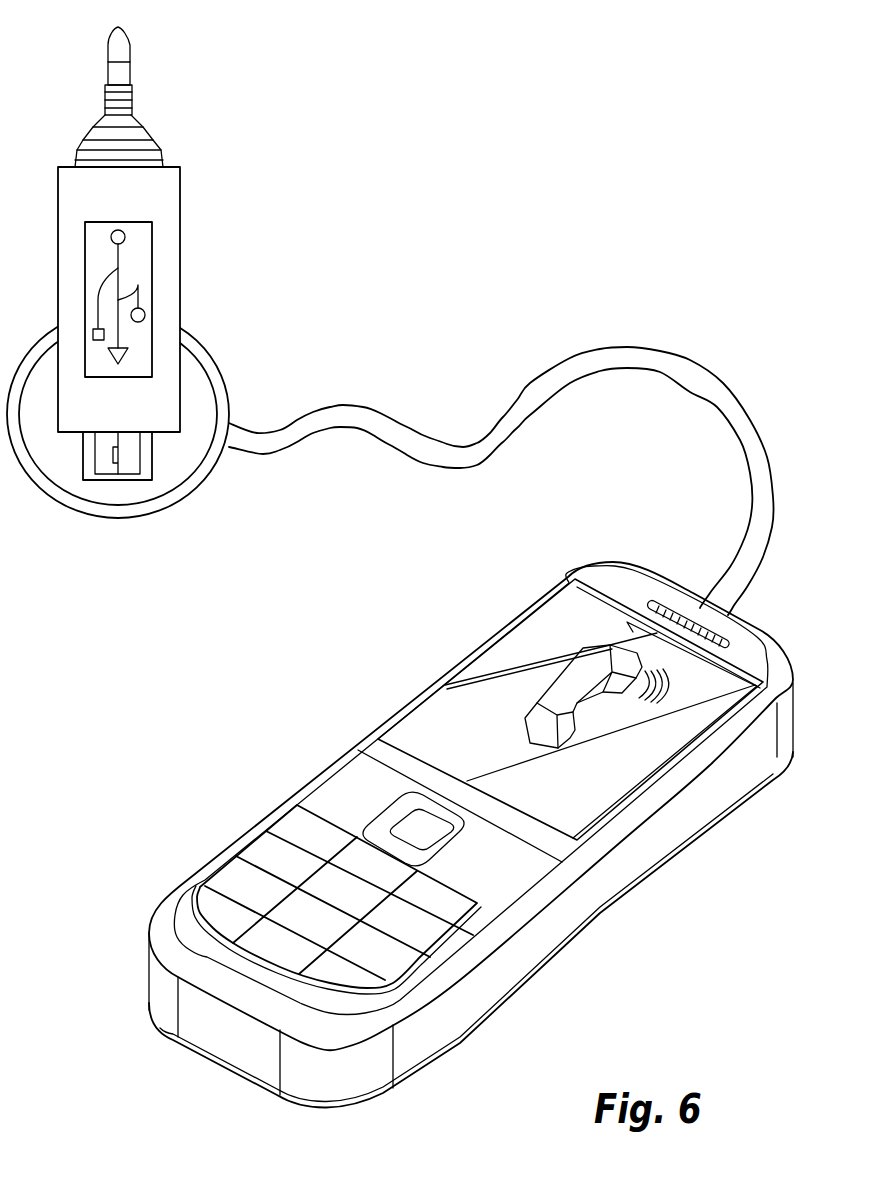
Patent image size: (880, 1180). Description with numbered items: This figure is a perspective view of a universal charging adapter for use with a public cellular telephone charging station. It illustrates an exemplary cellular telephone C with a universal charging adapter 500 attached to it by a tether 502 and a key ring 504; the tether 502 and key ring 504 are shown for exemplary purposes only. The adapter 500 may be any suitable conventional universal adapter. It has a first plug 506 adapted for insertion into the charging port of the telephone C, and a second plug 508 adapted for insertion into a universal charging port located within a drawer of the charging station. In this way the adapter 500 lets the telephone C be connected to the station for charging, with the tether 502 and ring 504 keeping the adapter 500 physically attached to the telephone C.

The universal charging adapter 500 is at (180, 202).
The tether 502 is at (582, 348).
The key ring 504 is at (227, 365).
The first plug 506 is at (130, 45).
The second plug 508 is at (153, 472).
The cellular telephone C is at (657, 958).